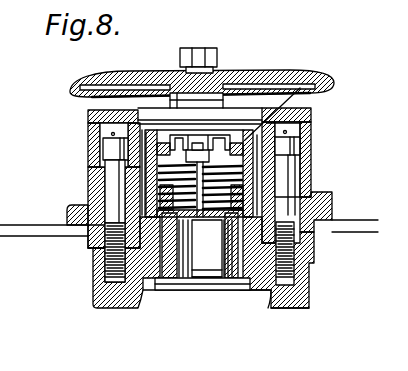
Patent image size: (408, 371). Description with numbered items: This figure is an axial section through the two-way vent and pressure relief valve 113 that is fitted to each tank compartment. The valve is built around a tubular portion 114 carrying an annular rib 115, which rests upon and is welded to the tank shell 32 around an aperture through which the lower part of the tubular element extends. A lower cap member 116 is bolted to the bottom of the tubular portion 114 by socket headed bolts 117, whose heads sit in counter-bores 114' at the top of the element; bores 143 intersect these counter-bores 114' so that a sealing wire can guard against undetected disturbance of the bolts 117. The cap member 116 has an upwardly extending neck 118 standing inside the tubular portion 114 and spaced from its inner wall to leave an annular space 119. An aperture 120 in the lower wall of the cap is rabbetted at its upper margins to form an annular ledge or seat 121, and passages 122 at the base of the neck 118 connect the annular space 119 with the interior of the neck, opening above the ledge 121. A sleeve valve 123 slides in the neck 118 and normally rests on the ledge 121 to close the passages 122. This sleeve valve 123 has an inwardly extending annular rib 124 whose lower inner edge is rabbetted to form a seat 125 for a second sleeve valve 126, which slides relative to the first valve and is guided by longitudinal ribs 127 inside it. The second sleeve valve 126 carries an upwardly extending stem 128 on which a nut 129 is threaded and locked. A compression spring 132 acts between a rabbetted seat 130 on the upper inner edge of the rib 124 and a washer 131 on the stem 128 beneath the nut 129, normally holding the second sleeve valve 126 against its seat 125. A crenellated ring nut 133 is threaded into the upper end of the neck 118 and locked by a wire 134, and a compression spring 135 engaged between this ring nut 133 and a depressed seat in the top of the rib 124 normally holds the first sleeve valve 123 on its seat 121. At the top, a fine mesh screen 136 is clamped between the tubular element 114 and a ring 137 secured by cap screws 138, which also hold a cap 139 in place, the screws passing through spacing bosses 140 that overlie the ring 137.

The tank shell 32 is at (357, 232).
The two-way vent and pressure relief valve 113 is at (87, 147).
The tubular portion 114 is at (336, 159).
The counter-bores 114' is at (321, 157).
The annular rib 115 is at (78, 206).
The lower cap member 116 is at (304, 295).
The socket headed bolts 117 is at (254, 190).
The neck 118 is at (236, 187).
The annular space 119 is at (100, 166).
The aperture 120 is at (220, 285).
The annular ledge or seat 121 is at (150, 292).
The passages 122 is at (274, 303).
The sleeve valve 123 is at (226, 282).
The annular rib 124 is at (90, 253).
The seat 125 is at (312, 198).
The second sleeve valve 126 is at (192, 280).
The ribs 127 is at (208, 278).
The stem 128 is at (200, 150).
The nut 129 is at (305, 74).
The rabbetted seat 130 is at (207, 248).
The washer 131 is at (300, 108).
The compression spring 132 is at (244, 172).
The crenellated ring nut 133 is at (264, 73).
The wire 134 is at (146, 140).
The compression spring 135 is at (88, 245).
The fine mesh screen 136 is at (182, 123).
The ring 137 is at (88, 112).
The cap screws 138 is at (203, 47).
The cap 139 is at (223, 140).
The spacing bosses 140 is at (175, 90).
The bores 143 is at (87, 127).